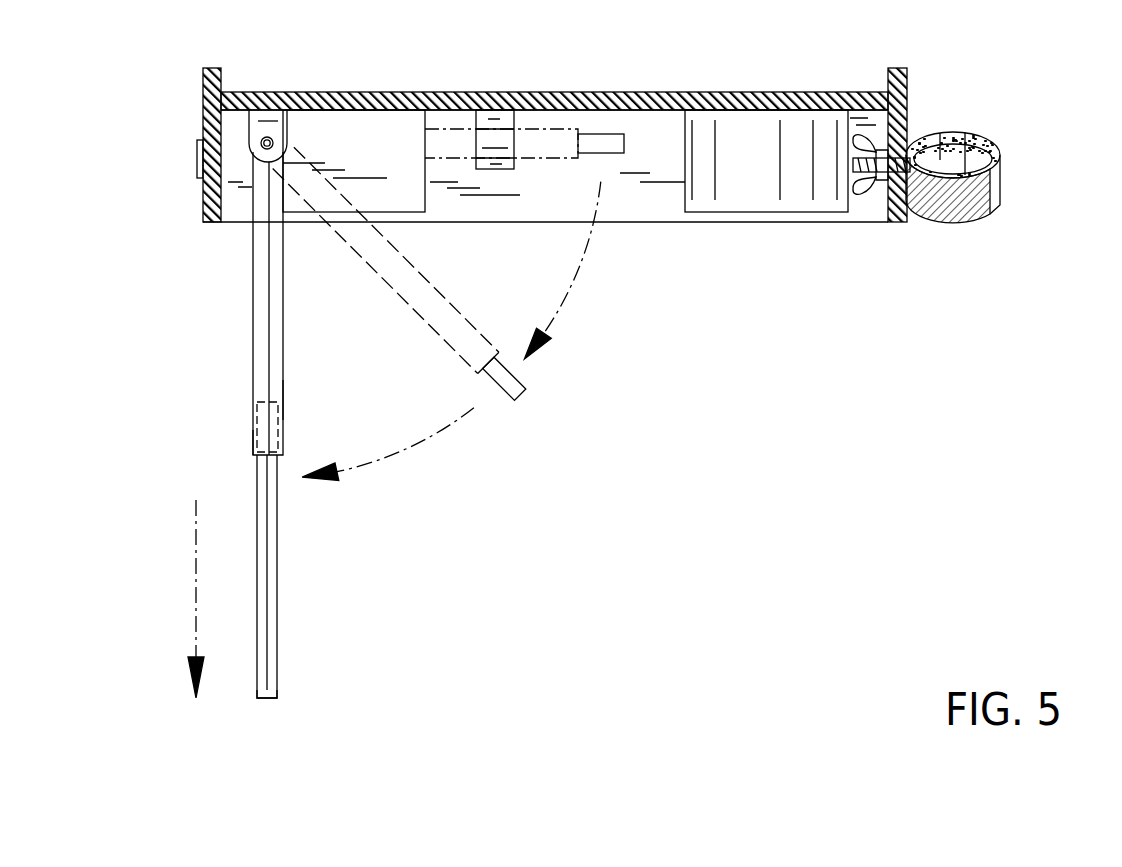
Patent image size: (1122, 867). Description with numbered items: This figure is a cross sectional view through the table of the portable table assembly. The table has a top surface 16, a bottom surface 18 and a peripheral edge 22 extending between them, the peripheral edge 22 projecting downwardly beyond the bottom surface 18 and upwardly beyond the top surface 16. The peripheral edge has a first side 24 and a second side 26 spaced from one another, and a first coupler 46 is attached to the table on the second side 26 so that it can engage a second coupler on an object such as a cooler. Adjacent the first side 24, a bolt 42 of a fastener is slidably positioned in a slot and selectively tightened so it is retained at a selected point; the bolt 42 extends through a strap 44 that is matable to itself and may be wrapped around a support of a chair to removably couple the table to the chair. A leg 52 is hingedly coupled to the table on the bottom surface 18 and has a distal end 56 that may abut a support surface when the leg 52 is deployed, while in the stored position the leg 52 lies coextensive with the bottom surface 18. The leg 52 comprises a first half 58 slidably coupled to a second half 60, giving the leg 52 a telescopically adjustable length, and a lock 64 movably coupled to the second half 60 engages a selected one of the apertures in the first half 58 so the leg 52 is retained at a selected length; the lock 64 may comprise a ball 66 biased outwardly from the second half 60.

The top surface 16 is at (546, 92).
The bottom surface 18 is at (666, 110).
The peripheral edge 22 is at (203, 125).
The first side 24 is at (907, 95).
The second side 26 is at (203, 195).
The bolt 42 is at (867, 190).
The strap 44 is at (965, 215).
The first coupler 46 is at (197, 152).
The leg 52 is at (253, 372).
The distal end 56 is at (261, 700).
The first half 58 is at (283, 398).
The second half 60 is at (278, 590).
The lock 64 is at (255, 428).
The ball 66 is at (253, 437).